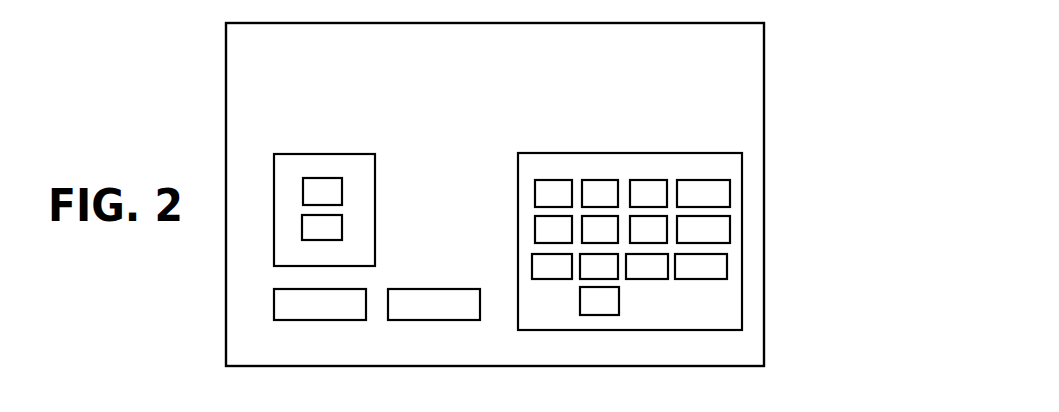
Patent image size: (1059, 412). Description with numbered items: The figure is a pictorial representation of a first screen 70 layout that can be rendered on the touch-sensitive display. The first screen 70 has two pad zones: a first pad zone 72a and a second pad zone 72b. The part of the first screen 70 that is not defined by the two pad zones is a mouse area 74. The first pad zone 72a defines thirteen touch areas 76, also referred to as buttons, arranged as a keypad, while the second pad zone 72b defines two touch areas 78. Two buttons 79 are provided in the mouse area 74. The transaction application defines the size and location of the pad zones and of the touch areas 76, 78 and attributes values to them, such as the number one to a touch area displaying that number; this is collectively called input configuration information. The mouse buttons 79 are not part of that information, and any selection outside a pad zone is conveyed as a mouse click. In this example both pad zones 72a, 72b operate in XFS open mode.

The first screen 70 is at (765, 60).
The mouse area 74 is at (507, 89).
The second pad zone 72b is at (328, 153).
The touch areas 78 is at (342, 190).
The buttons 79 is at (415, 320).
The first pad zone 72a is at (742, 208).
The touch areas 76 is at (552, 180).